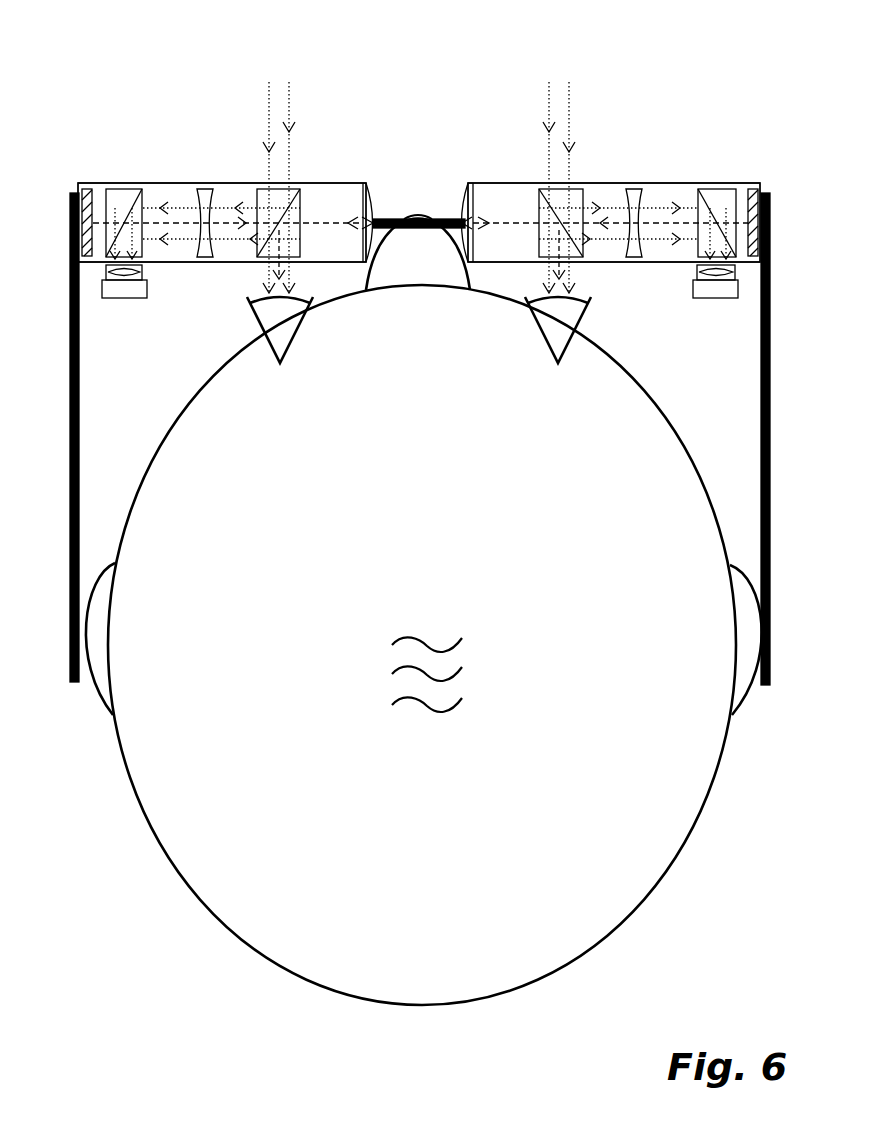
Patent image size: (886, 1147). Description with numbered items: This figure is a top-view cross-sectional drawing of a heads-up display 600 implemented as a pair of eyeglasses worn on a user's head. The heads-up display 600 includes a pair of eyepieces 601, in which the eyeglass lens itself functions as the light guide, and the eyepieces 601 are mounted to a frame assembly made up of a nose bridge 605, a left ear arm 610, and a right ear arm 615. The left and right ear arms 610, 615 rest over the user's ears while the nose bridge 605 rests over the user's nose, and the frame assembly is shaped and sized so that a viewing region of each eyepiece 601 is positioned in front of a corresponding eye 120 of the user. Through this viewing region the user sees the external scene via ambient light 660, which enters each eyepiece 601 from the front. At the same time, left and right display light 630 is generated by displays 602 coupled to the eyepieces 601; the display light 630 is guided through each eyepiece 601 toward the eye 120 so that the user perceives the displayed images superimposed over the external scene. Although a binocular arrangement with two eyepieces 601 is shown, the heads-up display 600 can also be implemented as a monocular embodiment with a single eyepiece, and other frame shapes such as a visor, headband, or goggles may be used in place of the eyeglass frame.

The heads-up display 600 is at (662, 42).
The eyepiece 601 is at (100, 183).
The display 602 is at (88, 192).
The nose bridge 605 is at (447, 218).
The left ear arm 610 is at (70, 420).
The right ear arm 615 is at (770, 405).
The display light 630 is at (280, 250).
The ambient light 660 is at (269, 110).
The eye 120 is at (290, 348).